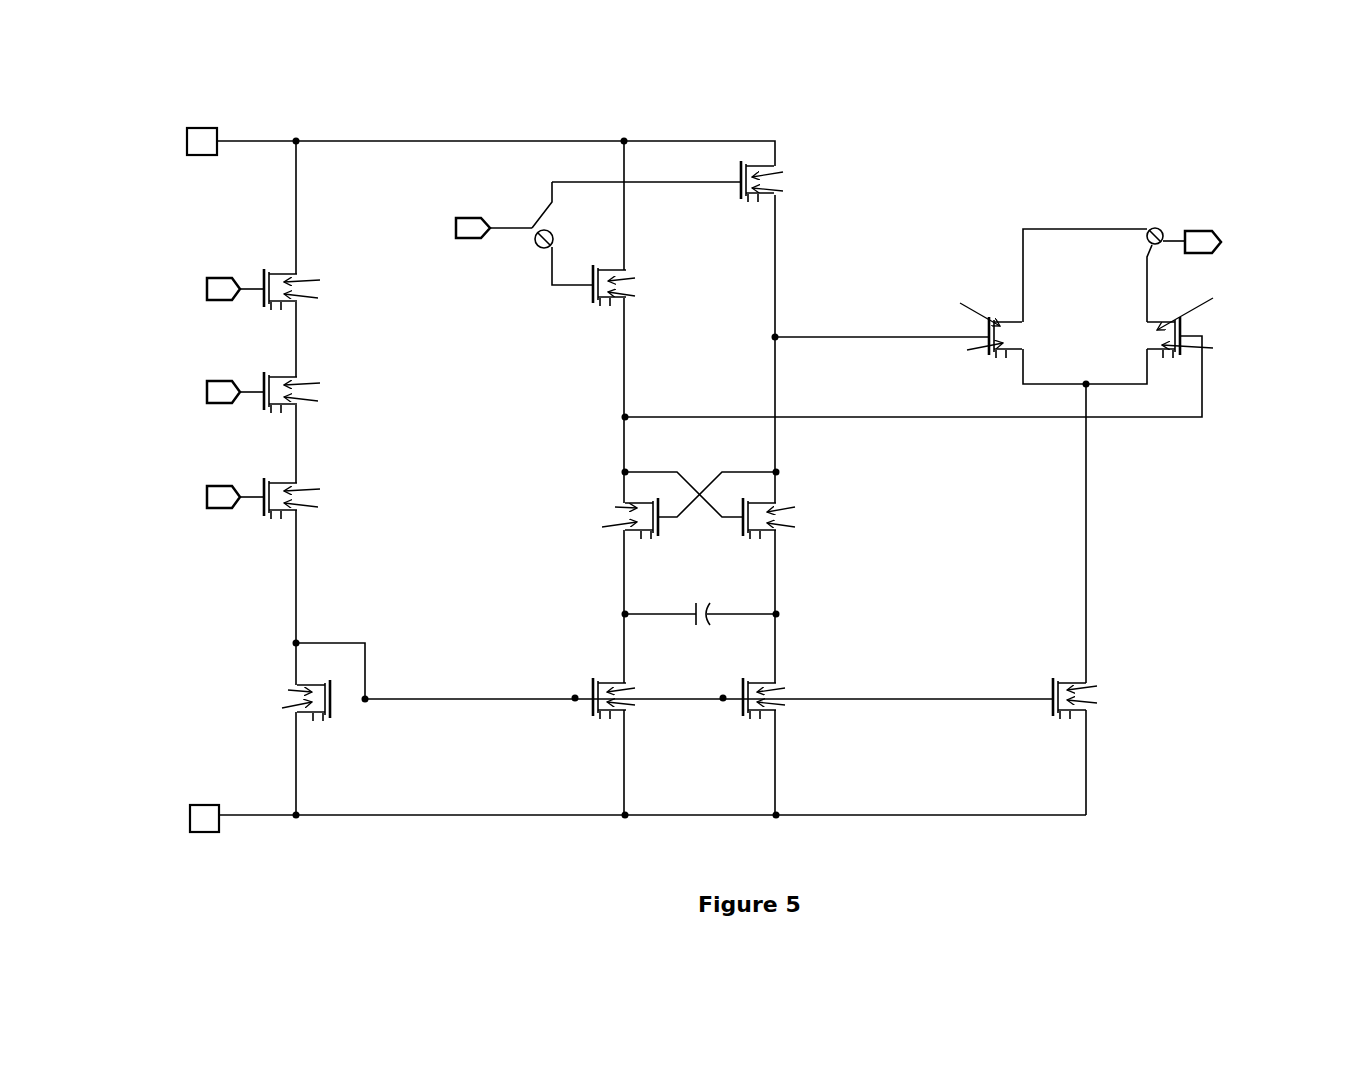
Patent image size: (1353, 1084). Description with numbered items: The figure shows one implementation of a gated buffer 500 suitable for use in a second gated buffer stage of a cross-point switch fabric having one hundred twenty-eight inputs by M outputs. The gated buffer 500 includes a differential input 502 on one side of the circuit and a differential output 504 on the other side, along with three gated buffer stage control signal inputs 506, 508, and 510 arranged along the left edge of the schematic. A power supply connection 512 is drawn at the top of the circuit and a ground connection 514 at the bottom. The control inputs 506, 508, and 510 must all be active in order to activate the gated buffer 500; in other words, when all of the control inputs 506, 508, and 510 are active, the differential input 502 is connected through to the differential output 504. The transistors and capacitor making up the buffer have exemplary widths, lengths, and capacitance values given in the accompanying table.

The gated buffer 500 is at (1012, 165).
The differential input 502 is at (498, 227).
The differential output 504 is at (1170, 240).
The gated buffer stage control signal input 506 is at (204, 276).
The gated buffer stage control signal input 508 is at (204, 380).
The gated buffer stage control signal input 510 is at (205, 485).
The power supply connection 512 is at (246, 140).
The ground connection 514 is at (246, 813).